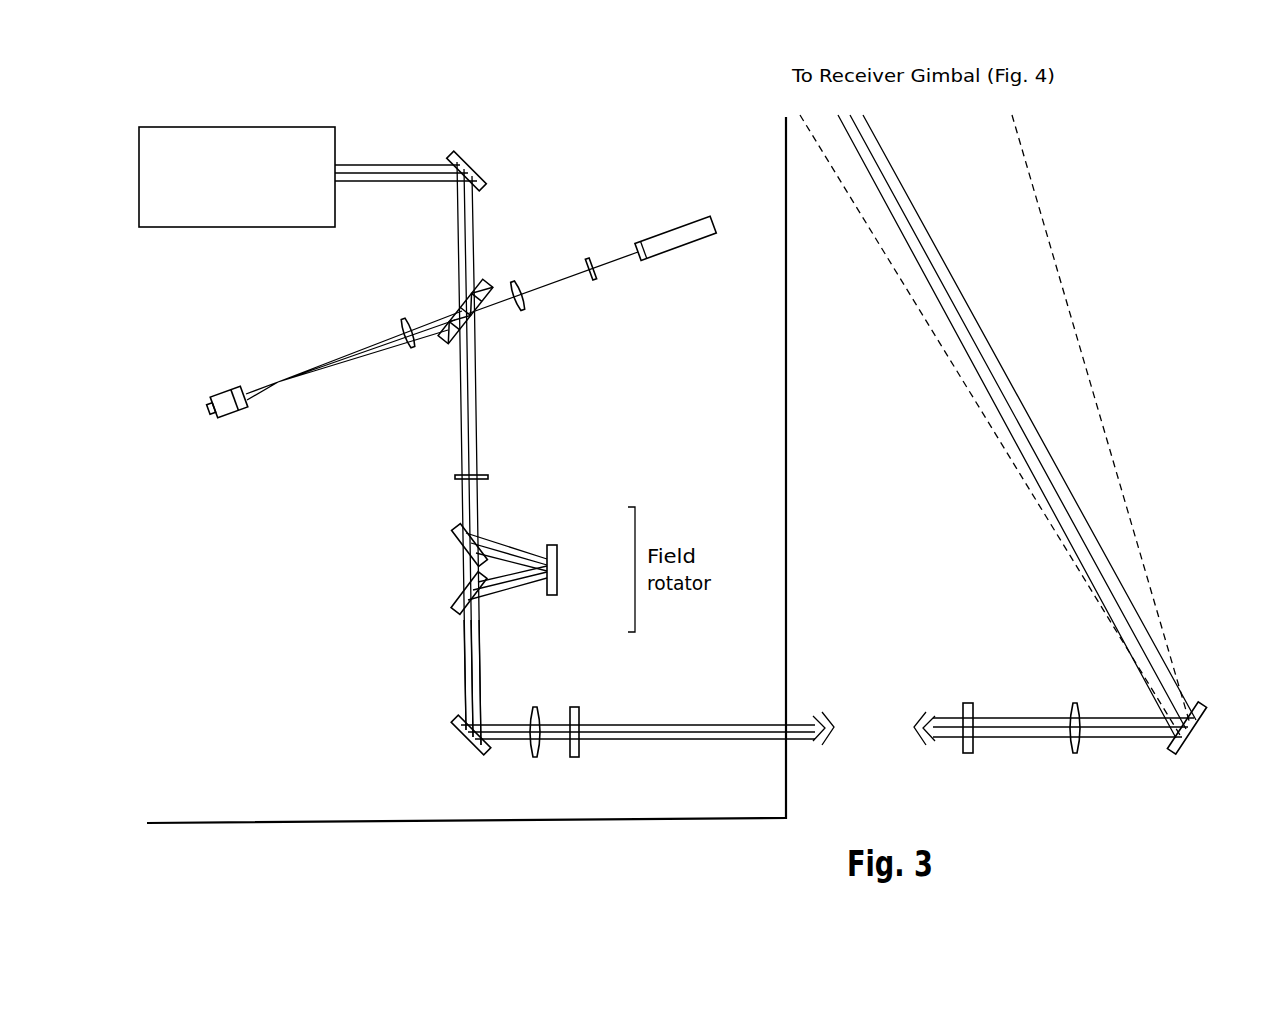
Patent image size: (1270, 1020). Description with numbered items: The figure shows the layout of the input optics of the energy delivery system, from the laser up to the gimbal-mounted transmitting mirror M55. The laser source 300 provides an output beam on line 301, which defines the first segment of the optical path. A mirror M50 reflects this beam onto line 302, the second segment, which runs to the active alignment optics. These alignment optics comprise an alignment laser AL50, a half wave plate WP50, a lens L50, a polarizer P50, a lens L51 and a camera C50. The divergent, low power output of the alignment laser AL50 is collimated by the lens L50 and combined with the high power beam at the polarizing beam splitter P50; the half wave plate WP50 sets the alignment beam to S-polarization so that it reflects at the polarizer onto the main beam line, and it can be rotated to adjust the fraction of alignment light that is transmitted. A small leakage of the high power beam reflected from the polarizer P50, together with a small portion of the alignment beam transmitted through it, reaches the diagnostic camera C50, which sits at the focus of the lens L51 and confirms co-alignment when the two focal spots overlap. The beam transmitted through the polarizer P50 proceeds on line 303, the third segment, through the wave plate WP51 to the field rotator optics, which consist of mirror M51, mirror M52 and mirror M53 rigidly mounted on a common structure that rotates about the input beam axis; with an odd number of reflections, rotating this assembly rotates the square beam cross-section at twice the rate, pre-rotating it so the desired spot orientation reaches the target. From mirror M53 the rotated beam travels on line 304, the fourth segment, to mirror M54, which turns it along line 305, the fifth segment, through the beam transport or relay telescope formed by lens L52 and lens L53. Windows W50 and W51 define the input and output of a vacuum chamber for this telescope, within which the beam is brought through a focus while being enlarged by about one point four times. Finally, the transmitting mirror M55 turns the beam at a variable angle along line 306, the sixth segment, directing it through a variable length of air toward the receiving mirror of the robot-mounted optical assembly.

The laser source 300 is at (237, 118).
The line 301 is at (393, 166).
The line 302 is at (475, 243).
The line 303 is at (482, 403).
The line 304 is at (463, 675).
The line 305 is at (655, 722).
The line 306 is at (1025, 398).
The mirror M50 is at (495, 171).
The alignment laser AL50 is at (591, 252).
The half wave plate WP50 is at (610, 286).
The lens L50 is at (530, 316).
The polarizer P50 is at (441, 357).
The lens L51 is at (401, 317).
The camera C50 is at (333, 365).
The wave plate WP51 is at (516, 475).
The mirror M51 is at (467, 547).
The mirror M52 is at (581, 570).
The mirror M53 is at (467, 590).
The mirror M54 is at (442, 738).
The lens L52 is at (518, 714).
The window W50 is at (593, 714).
The window W51 is at (1054, 710).
The lens L53 is at (1075, 710).
The transmitting mirror M55 is at (1205, 711).